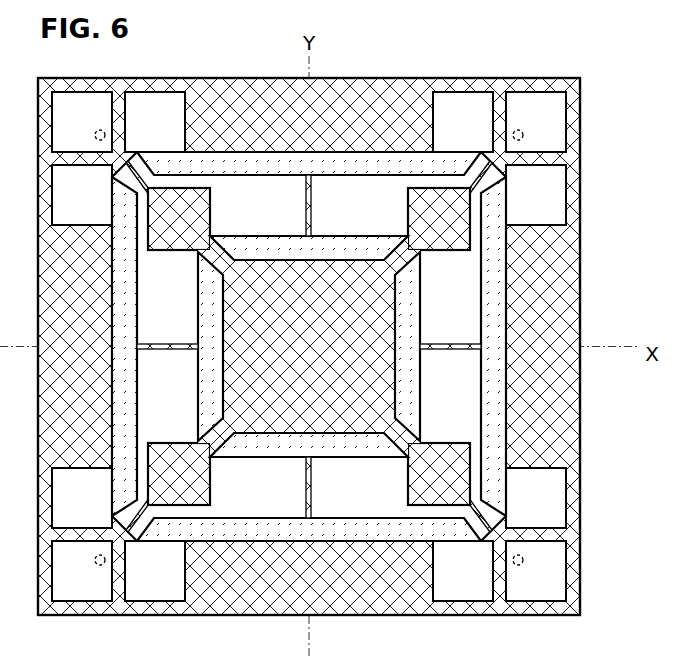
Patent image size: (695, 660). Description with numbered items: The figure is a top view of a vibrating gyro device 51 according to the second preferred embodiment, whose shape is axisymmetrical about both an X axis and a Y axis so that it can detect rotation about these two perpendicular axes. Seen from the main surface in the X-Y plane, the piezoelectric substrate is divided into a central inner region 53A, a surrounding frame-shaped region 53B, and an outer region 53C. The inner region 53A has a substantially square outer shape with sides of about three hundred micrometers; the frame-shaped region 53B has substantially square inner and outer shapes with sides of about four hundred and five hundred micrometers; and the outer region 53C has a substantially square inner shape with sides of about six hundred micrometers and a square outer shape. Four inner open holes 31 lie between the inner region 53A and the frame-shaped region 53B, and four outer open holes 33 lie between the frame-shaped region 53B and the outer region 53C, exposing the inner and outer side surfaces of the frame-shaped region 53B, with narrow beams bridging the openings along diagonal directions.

The vibrating gyro device 51 is at (562, 79).
The inner region 53A is at (313, 353).
The frame-shaped region 53B is at (459, 228).
The outer region 53C is at (540, 336).
The inner open holes 31 is at (297, 259).
The outer open holes 33 is at (297, 174).